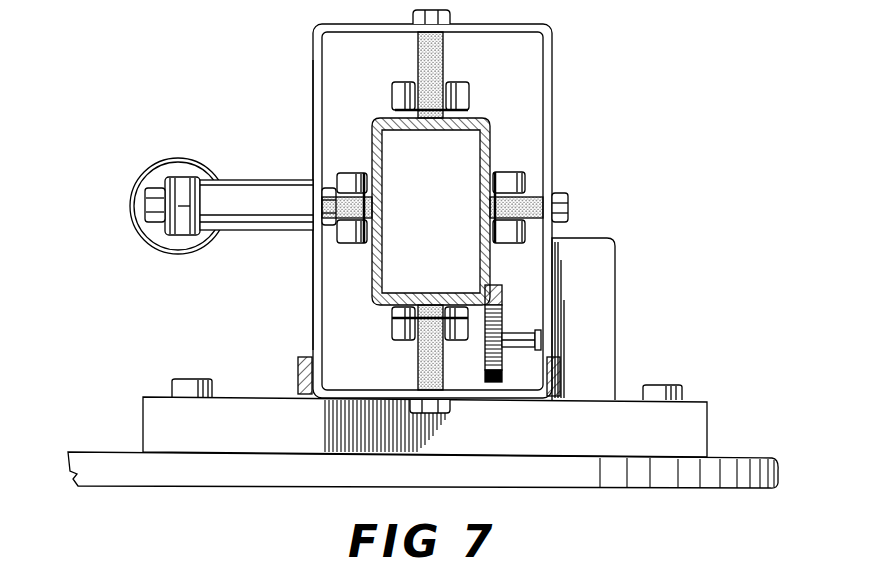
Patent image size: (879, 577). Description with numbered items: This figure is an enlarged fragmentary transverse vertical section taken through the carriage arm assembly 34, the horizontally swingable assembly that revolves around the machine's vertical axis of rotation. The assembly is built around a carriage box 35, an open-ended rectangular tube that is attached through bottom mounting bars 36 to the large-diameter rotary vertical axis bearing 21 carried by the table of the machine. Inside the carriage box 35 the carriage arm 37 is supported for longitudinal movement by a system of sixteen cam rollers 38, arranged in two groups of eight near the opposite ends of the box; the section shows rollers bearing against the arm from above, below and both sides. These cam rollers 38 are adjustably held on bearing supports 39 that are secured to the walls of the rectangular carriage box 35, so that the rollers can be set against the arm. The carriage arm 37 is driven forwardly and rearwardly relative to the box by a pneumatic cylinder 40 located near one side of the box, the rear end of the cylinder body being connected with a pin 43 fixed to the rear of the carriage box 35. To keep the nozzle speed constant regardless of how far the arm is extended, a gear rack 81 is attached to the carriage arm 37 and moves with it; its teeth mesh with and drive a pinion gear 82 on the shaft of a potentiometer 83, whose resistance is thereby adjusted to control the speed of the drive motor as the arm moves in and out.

The vertical axis bearing 21 is at (118, 460).
The carriage arm assembly 34 is at (552, 82).
The carriage box 35 is at (313, 90).
The bottom mounting bars 36 is at (680, 412).
The carriage arm 37 is at (477, 118).
The cam rollers 38 is at (512, 173).
The bearing supports 39 is at (530, 196).
The pneumatic cylinder 40 is at (190, 160).
The pin 43 is at (272, 180).
The gear rack 81 is at (502, 290).
The pinion gear 82 is at (494, 384).
The potentiometer 83 is at (602, 332).